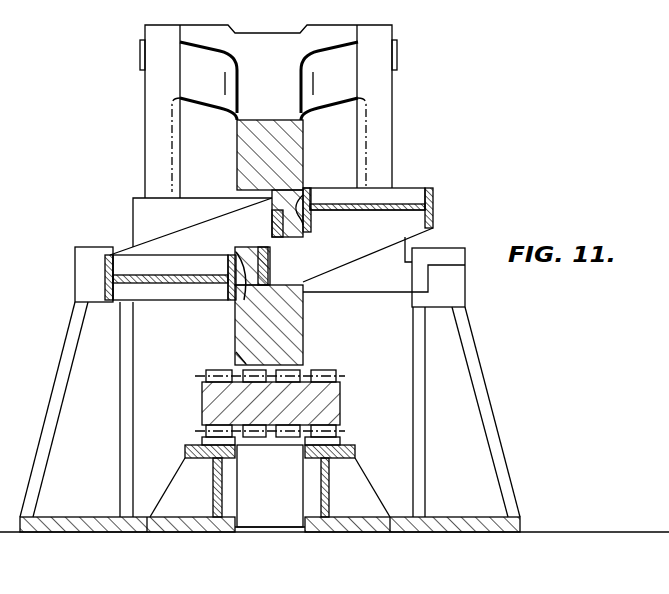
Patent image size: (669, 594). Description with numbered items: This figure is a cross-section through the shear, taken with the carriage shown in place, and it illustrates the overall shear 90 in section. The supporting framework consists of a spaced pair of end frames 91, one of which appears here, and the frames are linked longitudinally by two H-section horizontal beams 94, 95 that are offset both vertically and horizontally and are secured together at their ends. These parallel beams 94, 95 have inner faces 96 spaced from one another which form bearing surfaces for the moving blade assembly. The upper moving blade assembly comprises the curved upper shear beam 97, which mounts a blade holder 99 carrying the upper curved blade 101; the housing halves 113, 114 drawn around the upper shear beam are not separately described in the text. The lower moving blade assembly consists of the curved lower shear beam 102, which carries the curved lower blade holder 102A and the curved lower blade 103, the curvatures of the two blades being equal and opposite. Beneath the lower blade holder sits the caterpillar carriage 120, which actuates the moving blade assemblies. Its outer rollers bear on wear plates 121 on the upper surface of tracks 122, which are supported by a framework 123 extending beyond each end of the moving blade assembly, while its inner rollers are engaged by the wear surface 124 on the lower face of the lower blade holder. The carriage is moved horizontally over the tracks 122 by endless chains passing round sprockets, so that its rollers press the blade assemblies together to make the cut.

The frame assembly 90 is at (522, 342).
The end frame 91 is at (75, 332).
The H-section horizontal beam 94 is at (434, 203).
The H-section horizontal beam 95 is at (105, 280).
The inner face 96 is at (236, 272).
The upper shear beam 97 is at (273, 164).
The blade holder 99 is at (293, 195).
The upper curved blade 101 is at (270, 216).
The lower shear beam 102 is at (290, 345).
The lower blade holder 102A is at (240, 312).
The lower blade 103 is at (269, 262).
The housing half 113 is at (152, 104).
The housing half 114 is at (378, 121).
The caterpillar carriage 120 is at (325, 408).
The wear plate 121 is at (333, 438).
The track 122 is at (183, 450).
The framework 123 is at (355, 500).
The wear surface 124 is at (238, 350).